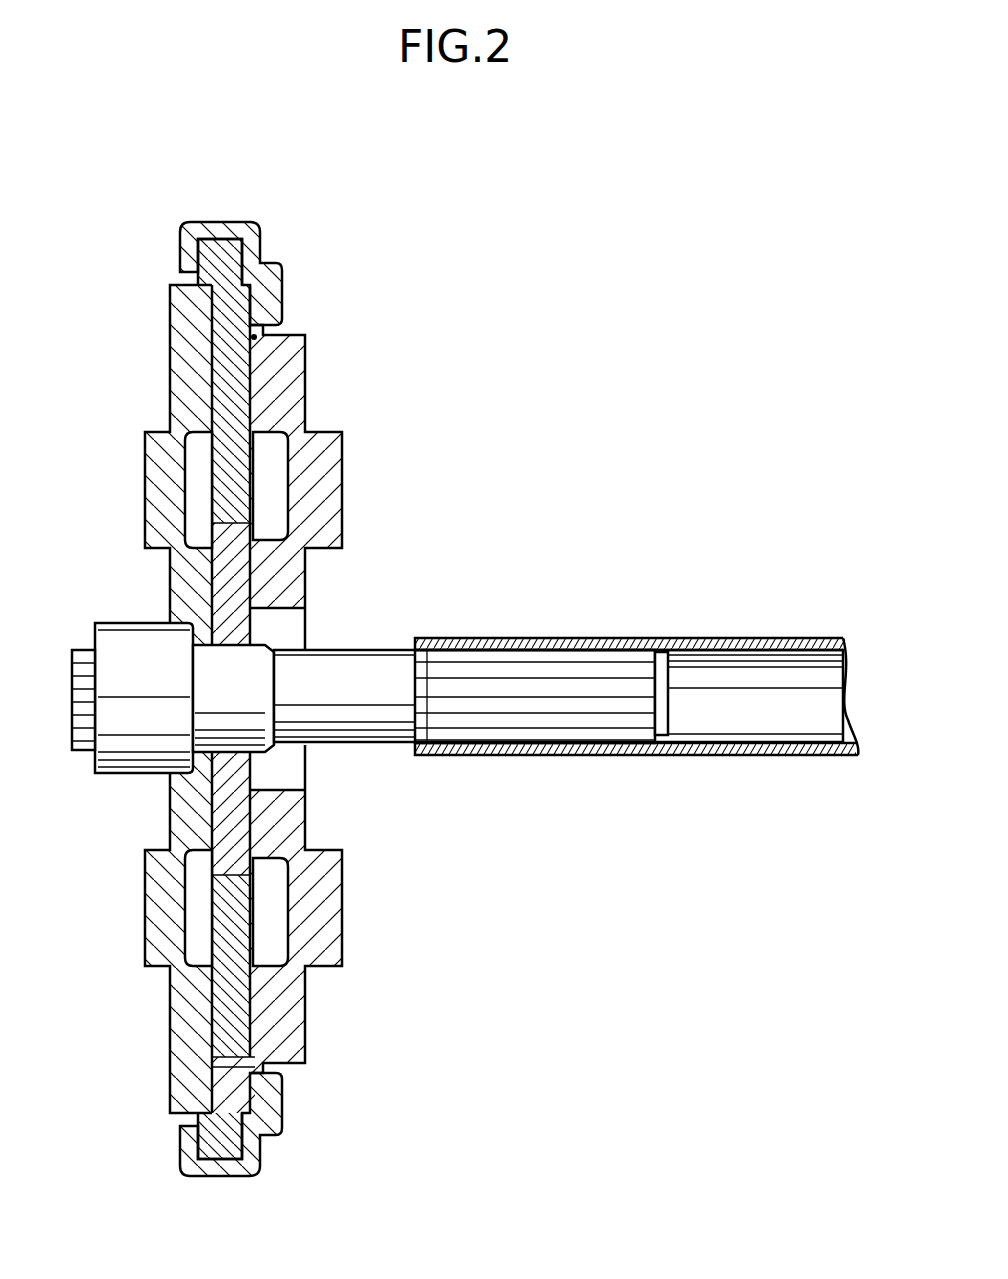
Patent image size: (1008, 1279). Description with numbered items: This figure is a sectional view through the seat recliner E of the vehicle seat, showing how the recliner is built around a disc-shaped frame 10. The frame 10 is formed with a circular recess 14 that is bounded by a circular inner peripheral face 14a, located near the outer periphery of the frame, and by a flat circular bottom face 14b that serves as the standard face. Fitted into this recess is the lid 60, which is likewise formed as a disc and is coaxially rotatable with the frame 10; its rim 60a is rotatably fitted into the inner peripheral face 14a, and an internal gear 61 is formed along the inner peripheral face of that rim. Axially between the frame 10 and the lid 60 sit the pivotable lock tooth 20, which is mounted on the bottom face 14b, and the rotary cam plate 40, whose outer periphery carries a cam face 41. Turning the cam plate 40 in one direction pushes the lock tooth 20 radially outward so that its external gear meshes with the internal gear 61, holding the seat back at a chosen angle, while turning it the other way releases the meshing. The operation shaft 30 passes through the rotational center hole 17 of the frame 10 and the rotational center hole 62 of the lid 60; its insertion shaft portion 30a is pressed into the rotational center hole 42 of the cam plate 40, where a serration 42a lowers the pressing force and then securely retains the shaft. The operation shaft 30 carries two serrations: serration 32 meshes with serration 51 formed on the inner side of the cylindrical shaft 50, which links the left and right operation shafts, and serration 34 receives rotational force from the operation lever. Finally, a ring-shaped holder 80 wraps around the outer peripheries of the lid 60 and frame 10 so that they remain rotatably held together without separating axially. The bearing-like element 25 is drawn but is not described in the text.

The frame 10 is at (166, 328).
The circular recess 14 is at (206, 430).
The inner peripheral face 14a is at (252, 262).
The bottom face 14b is at (262, 302).
The rotational center hole 17 is at (152, 636).
The lock tooth 20 is at (259, 396).
The bearing 25 is at (244, 538).
The operation shaft 30 is at (378, 648).
The insertion shaft portion 30a is at (330, 745).
The serration 32 is at (597, 672).
The serration 34 is at (85, 648).
The rotary cam plate 40 is at (258, 587).
The cam face 41 is at (231, 527).
The rotational center hole 42 is at (263, 612).
The serration 42a is at (223, 712).
The cylindrical shaft 50 is at (737, 632).
The serration 51 is at (666, 665).
The lid 60 is at (308, 357).
The rim 60a is at (254, 318).
The internal gear 61 is at (256, 338).
The rotational center hole 62 is at (283, 775).
The ring-shaped holder 80 is at (180, 242).
The recliner E is at (262, 215).